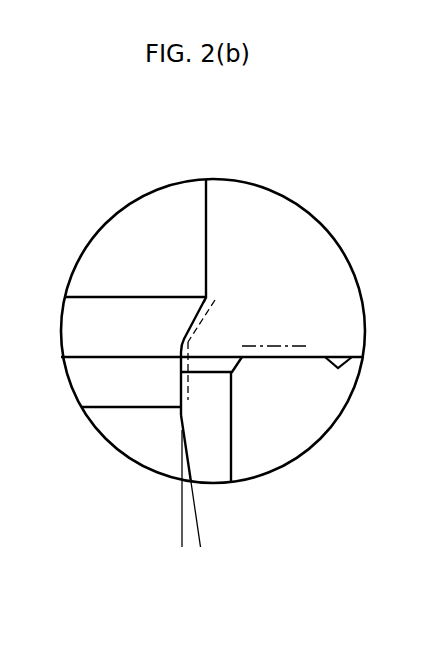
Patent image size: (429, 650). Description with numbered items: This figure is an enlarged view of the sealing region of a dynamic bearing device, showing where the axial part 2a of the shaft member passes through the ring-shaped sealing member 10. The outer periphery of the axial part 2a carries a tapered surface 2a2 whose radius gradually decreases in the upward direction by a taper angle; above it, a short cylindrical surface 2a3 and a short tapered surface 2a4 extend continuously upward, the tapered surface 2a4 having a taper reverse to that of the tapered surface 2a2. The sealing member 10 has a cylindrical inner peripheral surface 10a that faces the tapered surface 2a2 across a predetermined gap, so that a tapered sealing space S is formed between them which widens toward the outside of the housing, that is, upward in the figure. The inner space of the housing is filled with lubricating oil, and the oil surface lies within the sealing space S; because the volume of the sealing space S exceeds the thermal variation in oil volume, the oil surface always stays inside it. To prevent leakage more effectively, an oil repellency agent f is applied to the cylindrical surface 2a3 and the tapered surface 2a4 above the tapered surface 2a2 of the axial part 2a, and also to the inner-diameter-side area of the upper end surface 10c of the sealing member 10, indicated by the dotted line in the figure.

The axial part 2a is at (195, 209).
The tapered surface 2a4 is at (108, 304).
The cylindrical surface 2a3 is at (92, 382).
The tapered surface 2a2 is at (188, 448).
The sealing member 10 is at (270, 458).
The inner peripheral surface 10a is at (232, 402).
The upper end surface 10c is at (358, 352).
The sealing space S is at (200, 415).
The oil repellency agent f is at (190, 372).